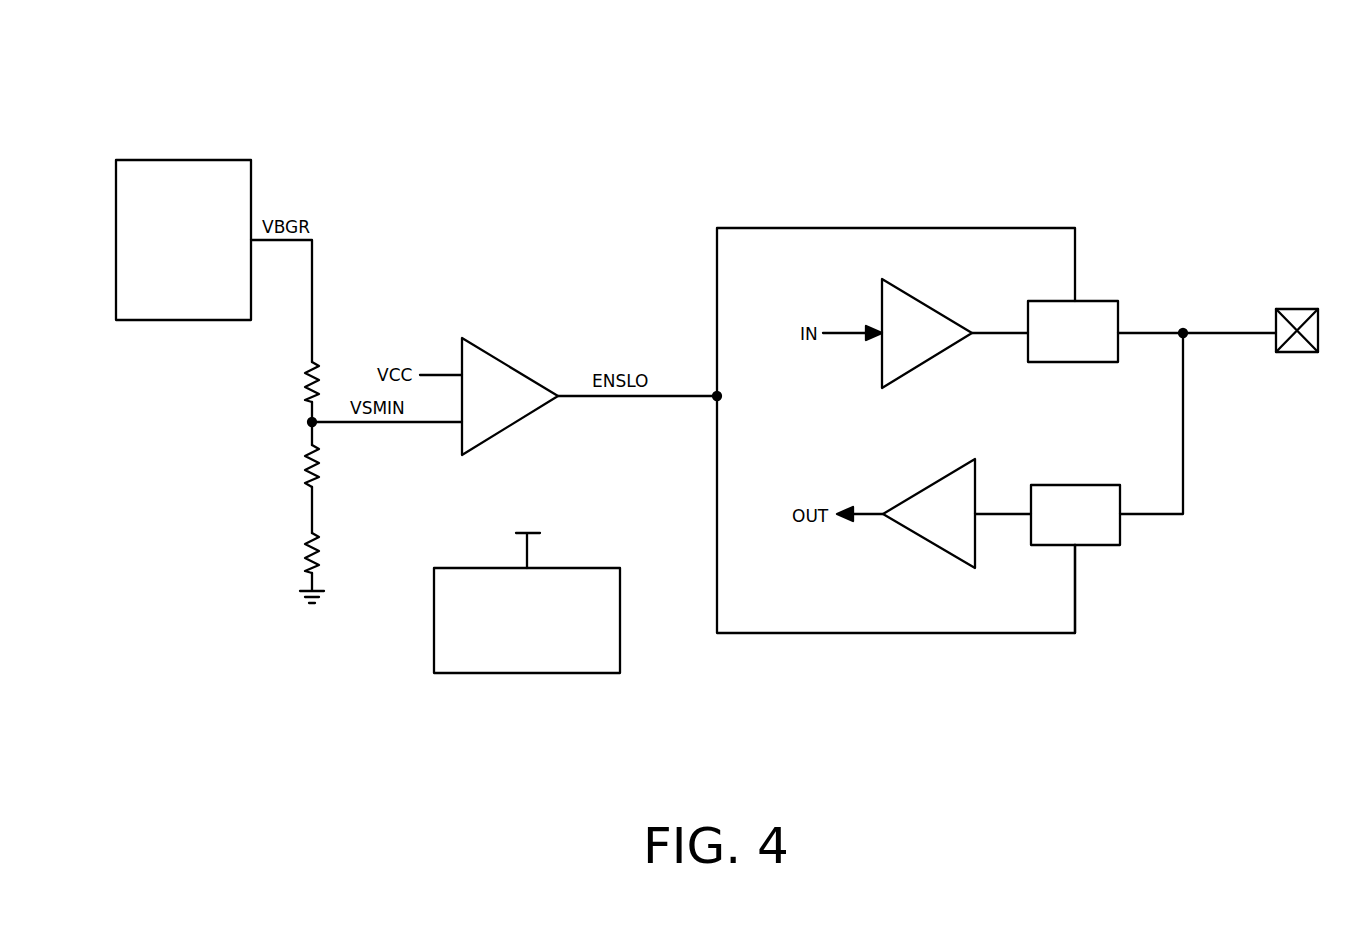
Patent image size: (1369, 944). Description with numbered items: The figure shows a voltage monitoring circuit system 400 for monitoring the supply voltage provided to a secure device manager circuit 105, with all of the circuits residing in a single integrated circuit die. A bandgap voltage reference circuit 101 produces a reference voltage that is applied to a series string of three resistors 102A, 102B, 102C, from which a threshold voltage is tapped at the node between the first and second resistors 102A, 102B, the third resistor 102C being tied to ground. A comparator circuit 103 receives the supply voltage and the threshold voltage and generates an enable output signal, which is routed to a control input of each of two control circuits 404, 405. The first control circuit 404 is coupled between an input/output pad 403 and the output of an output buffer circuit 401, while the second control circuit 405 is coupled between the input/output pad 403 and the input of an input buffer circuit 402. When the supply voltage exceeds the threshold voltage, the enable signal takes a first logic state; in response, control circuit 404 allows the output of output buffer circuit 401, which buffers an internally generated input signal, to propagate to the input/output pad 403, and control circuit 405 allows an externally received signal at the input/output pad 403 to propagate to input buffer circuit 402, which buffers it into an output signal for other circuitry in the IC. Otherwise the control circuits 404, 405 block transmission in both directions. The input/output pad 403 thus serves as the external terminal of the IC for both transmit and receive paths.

The voltage monitoring circuit system 400 is at (203, 68).
The bandgap voltage reference circuit 101 is at (216, 160).
The resistor 102A is at (305, 378).
The resistor 102B is at (305, 463).
The resistor 102C is at (305, 548).
The comparator circuit 103 is at (490, 352).
The secure device manager circuit 105 is at (590, 568).
The output buffer circuit 401 is at (935, 357).
The input buffer circuit 402 is at (923, 540).
The input/output pad 403 is at (1297, 309).
The control circuit 404 is at (1103, 300).
The control circuit 405 is at (1107, 485).